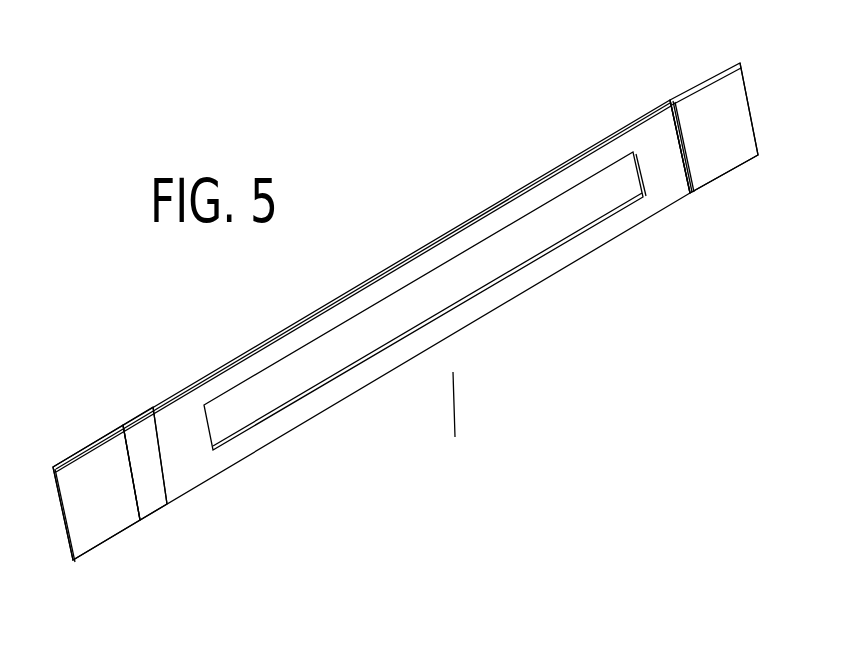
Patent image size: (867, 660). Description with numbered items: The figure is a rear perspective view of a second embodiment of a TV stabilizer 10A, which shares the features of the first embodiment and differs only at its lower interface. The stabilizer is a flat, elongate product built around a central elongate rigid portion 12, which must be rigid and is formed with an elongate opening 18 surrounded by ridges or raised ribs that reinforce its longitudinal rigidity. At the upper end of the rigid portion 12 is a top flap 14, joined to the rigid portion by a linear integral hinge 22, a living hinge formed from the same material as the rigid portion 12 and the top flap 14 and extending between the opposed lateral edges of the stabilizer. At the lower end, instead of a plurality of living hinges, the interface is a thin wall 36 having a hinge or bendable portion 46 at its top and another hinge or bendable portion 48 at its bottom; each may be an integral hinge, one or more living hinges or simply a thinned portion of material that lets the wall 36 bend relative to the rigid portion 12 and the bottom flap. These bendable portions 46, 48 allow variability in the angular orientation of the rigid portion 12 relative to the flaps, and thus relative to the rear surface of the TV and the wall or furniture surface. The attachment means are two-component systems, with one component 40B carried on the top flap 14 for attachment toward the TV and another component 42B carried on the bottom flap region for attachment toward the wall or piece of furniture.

The TV stabilizer 10A is at (453, 372).
The rigid portion 12 is at (362, 279).
The top flap 14 is at (697, 90).
The elongate opening 18 is at (492, 263).
The integral hinge 22 is at (670, 100).
The thin wall 36 is at (160, 493).
The attachment means component 40B is at (728, 148).
The attachment means component 42B is at (87, 495).
The bendable portion 46 is at (153, 407).
The bendable portion 48 is at (123, 428).